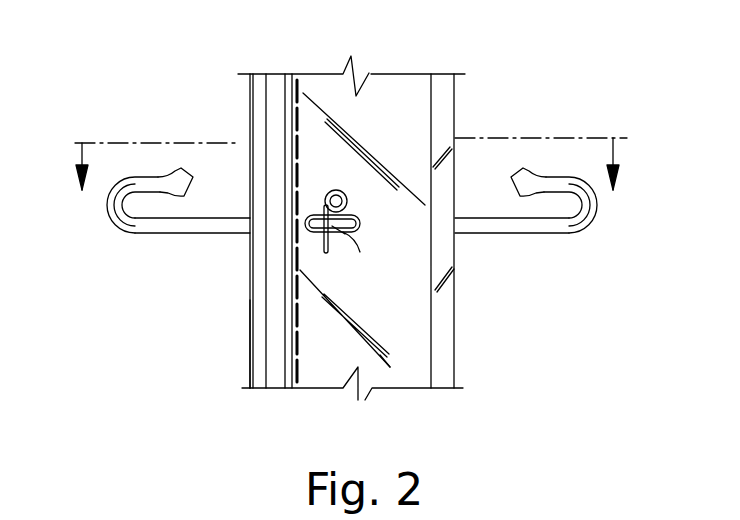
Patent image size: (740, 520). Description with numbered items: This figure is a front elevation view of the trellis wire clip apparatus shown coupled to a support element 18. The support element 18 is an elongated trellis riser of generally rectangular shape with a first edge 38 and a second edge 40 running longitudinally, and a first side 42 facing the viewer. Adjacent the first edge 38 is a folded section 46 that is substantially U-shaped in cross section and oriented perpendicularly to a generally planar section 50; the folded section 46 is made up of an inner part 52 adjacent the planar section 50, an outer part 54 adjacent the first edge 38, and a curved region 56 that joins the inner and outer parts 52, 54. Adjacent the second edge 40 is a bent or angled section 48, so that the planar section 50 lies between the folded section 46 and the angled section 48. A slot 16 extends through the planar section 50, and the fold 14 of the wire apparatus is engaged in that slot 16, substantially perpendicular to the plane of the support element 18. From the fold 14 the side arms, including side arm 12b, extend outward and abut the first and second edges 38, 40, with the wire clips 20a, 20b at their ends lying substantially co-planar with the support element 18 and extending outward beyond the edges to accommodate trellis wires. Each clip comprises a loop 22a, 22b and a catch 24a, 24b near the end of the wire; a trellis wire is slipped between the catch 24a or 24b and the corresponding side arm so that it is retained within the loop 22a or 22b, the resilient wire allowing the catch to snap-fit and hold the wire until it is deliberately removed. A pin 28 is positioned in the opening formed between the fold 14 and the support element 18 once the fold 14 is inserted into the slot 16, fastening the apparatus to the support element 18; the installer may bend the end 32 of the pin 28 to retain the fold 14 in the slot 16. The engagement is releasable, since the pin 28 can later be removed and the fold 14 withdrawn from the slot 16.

The side arm 12b is at (187, 234).
The fold 14 is at (360, 258).
The slot 16 is at (305, 230).
The support element 18 is at (402, 310).
The wire clip 20a is at (107, 205).
The wire clip 20b is at (598, 205).
The loop 22a is at (138, 177).
The loop 22b is at (571, 177).
The catch 24a is at (183, 207).
The catch 24b is at (528, 207).
The pin 28 is at (348, 203).
The end of pin 32 is at (365, 243).
The first edge 38 is at (247, 103).
The second edge 40 is at (455, 99).
The first side 42 is at (373, 98).
The folded section 46 is at (270, 85).
The angled section 48 is at (450, 372).
The planar section 50 is at (405, 358).
The inner part 52 is at (300, 357).
The outer part 54 is at (248, 352).
The curved region 56 is at (275, 377).